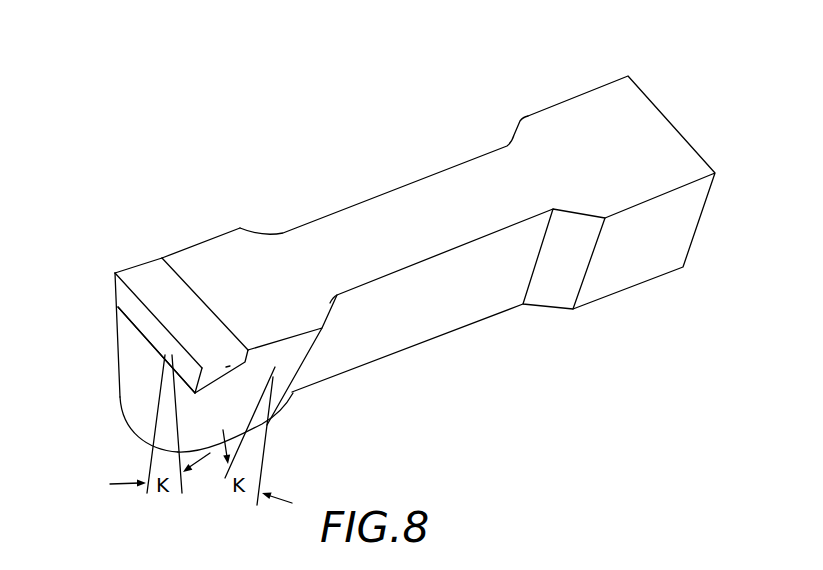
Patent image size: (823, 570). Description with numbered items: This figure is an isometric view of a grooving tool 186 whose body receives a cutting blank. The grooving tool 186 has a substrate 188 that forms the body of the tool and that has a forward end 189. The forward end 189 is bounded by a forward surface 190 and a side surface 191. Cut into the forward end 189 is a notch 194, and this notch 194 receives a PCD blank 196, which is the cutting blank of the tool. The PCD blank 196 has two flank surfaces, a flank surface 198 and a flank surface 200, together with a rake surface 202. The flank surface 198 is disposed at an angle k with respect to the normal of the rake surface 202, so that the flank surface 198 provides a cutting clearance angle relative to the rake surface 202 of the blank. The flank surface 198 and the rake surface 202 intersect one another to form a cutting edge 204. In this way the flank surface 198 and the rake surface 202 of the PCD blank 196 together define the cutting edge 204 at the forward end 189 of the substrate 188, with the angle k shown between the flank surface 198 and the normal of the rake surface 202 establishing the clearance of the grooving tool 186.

The grooving tool 186 is at (487, 118).
The substrate 188 is at (657, 142).
The forward end 189 is at (123, 398).
The forward surface 190 is at (137, 382).
The side surface 191 is at (283, 392).
The notch 194 is at (201, 302).
The PCD blank 196 is at (140, 285).
The flank surface 198 is at (120, 305).
The flank surface 200 is at (248, 354).
The rake surface 202 is at (115, 273).
The cutting edge 204 is at (157, 323).